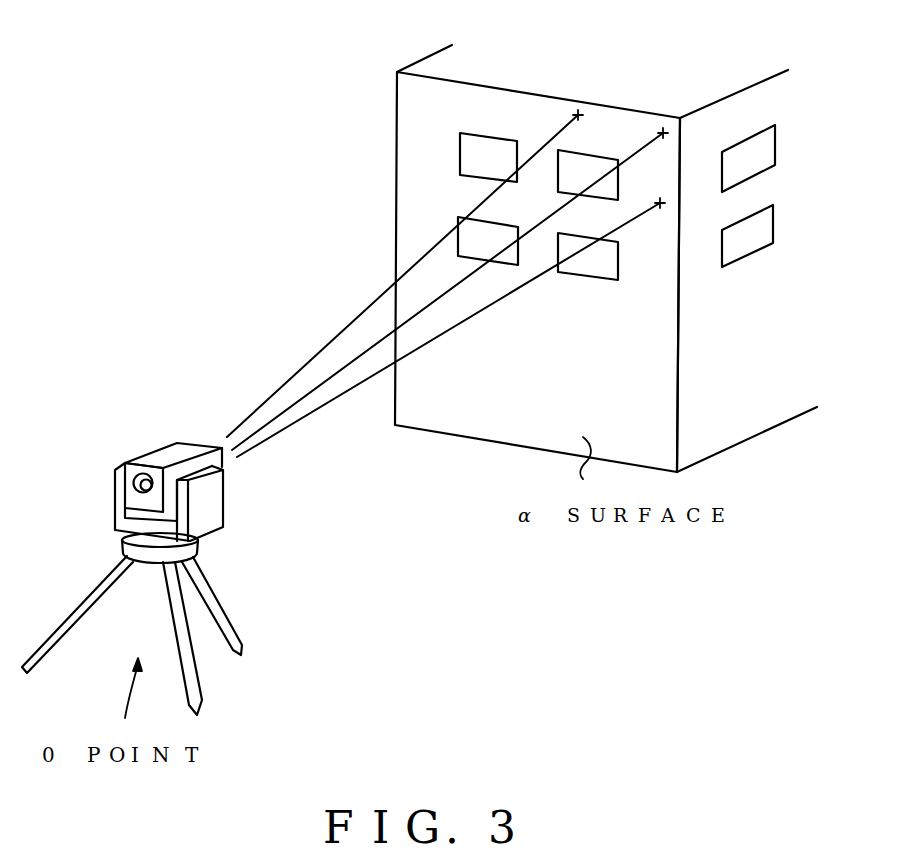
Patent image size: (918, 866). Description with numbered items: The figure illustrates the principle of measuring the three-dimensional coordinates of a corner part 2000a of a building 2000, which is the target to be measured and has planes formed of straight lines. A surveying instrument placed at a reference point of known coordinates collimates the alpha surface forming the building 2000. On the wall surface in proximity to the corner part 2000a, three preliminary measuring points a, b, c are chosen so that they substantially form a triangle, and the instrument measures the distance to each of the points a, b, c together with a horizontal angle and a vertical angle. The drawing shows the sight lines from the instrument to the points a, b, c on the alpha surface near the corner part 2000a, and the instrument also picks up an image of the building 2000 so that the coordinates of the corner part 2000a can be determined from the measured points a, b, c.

The building 2000 is at (410, 183).
The corner part 2000a is at (680, 118).
The preliminary measuring point a is at (582, 100).
The preliminary measuring point b is at (675, 202).
The preliminary measuring point c is at (649, 127).